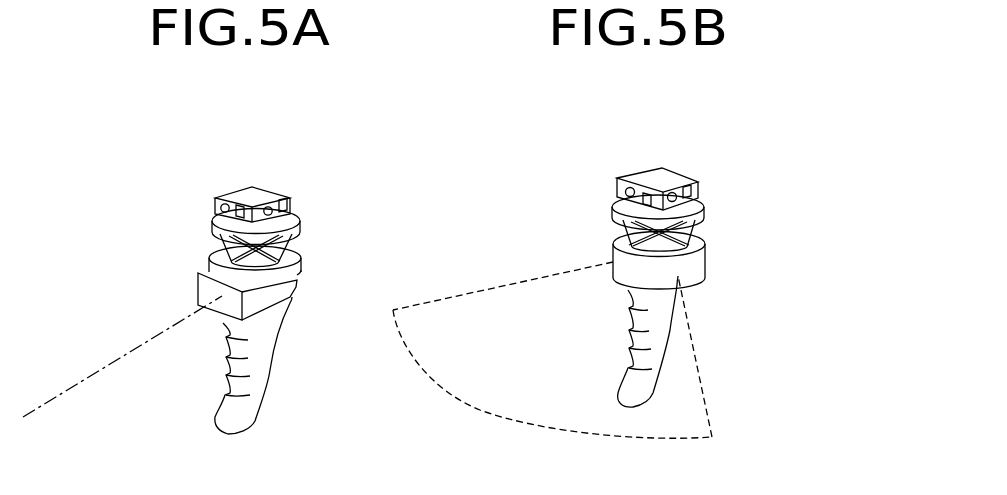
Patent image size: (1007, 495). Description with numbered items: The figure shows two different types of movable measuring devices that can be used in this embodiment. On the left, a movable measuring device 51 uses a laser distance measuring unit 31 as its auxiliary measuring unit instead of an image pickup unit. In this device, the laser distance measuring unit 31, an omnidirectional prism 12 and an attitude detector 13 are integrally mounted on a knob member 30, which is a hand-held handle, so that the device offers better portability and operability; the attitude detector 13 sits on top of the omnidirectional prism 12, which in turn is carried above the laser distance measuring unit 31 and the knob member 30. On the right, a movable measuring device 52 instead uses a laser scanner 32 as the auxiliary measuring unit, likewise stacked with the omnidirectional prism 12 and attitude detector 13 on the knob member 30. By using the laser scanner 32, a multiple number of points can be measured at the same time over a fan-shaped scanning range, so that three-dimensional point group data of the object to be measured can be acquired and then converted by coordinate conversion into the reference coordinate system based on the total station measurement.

In FIG. 5A, the attitude detector 13 is at (270, 188).
In FIG. 5B, the attitude detector 13 is at (668, 171).
In FIG. 5A, the omnidirectional prism 12 is at (301, 233).
In FIG. 5B, the omnidirectional prism 12 is at (695, 220).
In FIG. 5A, the movable measuring device 51 is at (314, 278).
In FIG. 5A, the laser distance measuring unit 31 is at (200, 282).
In FIG. 5A, the knob member 30 is at (270, 365).
In FIG. 5B, the knob member 30 is at (670, 345).
In FIG. 5B, the movable measuring device 52 is at (727, 265).
In FIG. 5B, the laser scanner 32 is at (620, 278).